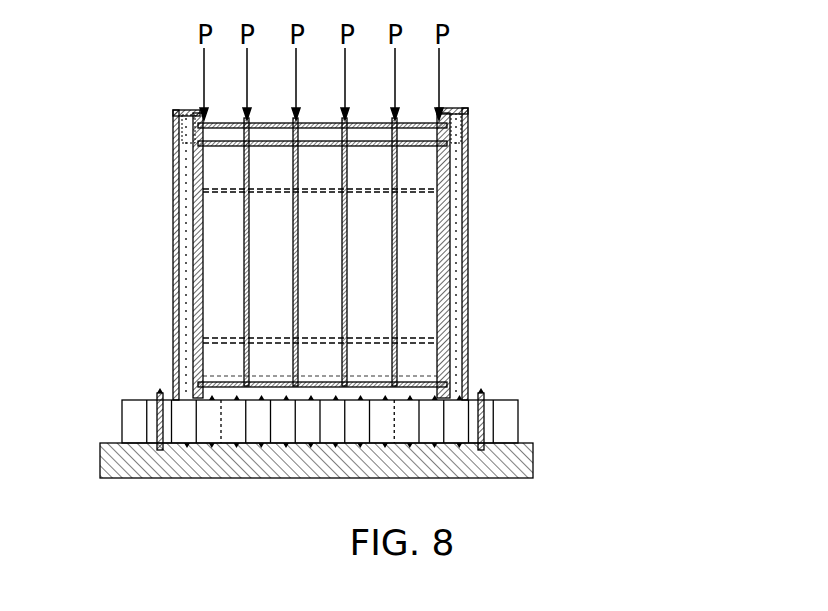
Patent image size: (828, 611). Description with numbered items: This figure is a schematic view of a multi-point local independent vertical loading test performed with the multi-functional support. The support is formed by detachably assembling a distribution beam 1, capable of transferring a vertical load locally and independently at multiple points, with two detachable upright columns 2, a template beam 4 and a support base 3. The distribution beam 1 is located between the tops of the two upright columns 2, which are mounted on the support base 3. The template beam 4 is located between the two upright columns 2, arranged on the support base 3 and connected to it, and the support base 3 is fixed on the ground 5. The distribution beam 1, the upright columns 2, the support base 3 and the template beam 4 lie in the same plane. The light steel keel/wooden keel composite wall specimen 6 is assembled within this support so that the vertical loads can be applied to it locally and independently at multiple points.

The distribution beam 1 is at (463, 108).
The detachable upright columns 2 is at (453, 178).
The light steel keel/wooden keel composite wall specimen 6 is at (413, 273).
The template beam 4 is at (430, 390).
The support base 3 is at (503, 418).
The ground 5 is at (520, 466).